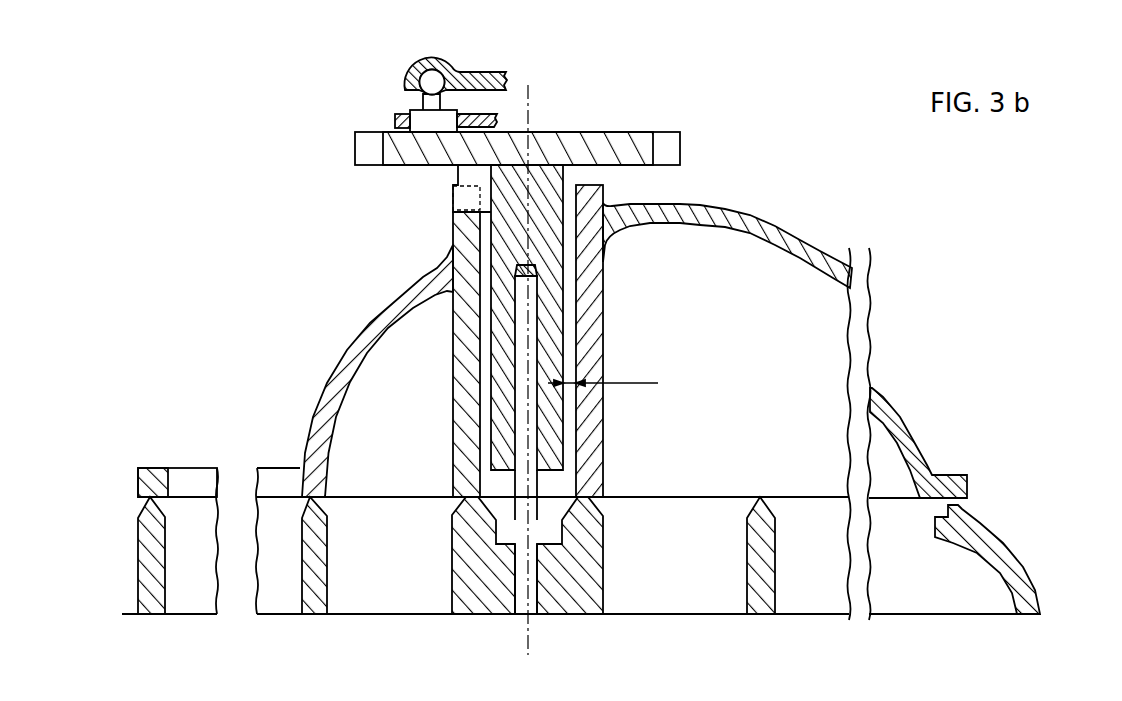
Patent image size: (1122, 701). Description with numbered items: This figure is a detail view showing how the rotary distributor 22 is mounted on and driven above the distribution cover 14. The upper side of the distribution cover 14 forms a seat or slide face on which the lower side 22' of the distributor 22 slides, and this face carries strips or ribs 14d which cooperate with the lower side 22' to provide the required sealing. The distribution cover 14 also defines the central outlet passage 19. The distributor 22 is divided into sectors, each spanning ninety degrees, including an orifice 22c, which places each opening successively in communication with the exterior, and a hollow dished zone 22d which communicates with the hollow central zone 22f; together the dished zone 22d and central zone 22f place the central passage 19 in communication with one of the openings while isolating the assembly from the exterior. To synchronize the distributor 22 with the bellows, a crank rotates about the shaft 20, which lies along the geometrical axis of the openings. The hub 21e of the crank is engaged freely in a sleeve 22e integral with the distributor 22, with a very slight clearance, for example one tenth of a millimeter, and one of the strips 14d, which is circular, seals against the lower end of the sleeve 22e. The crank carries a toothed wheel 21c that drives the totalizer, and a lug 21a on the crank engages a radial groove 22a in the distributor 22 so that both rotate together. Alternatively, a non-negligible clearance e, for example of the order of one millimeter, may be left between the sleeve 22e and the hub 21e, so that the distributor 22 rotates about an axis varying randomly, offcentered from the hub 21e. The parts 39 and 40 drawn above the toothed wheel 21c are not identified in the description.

The distribution cover 14 is at (1000, 557).
The strips or ribs 14d is at (141, 510).
The central outlet passage 19 is at (387, 603).
The shaft 20 is at (520, 607).
The lug 21a is at (457, 173).
The toothed wheel 21c is at (622, 147).
The hub 21e is at (553, 336).
The rotary distributor 22 is at (387, 354).
The lower side of the distributor 22' is at (555, 447).
The radial groove 22a is at (452, 210).
The orifice 22c is at (201, 482).
The dished zone 22d is at (778, 421).
The sleeve 22e is at (590, 421).
The hollow central zone 22f is at (410, 418).
The clip 39 is at (475, 73).
The support 40 is at (398, 115).
The clearance e is at (658, 379).